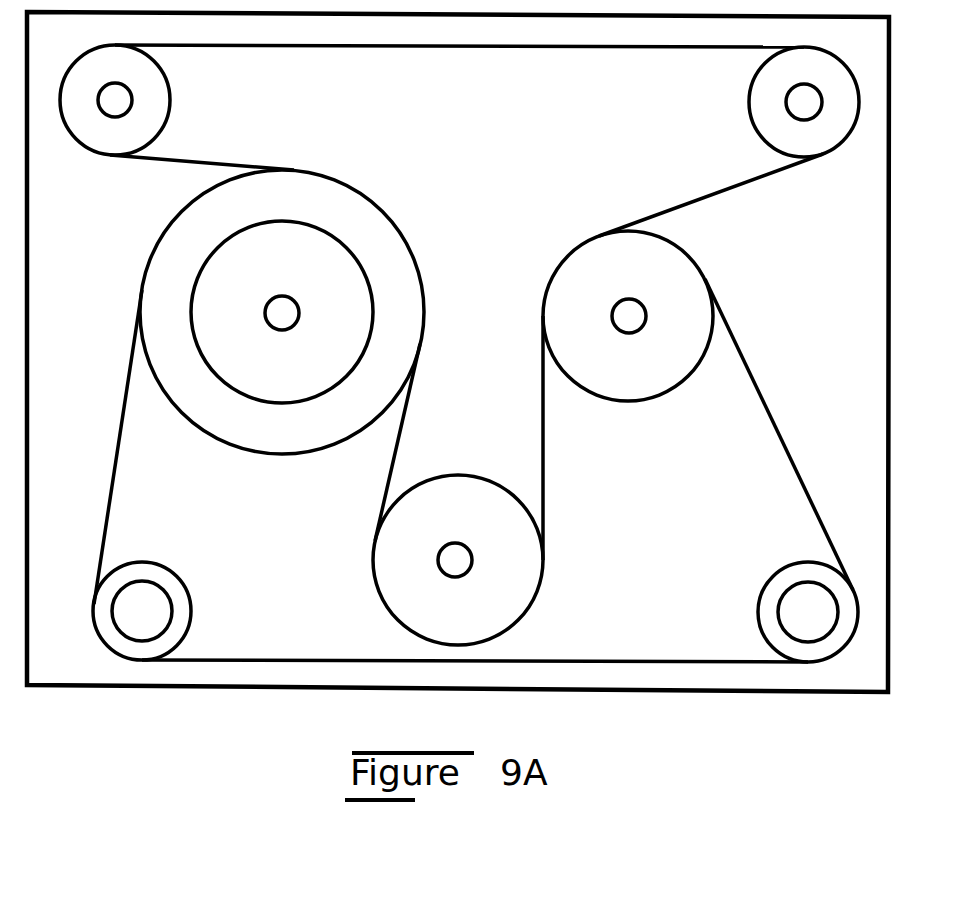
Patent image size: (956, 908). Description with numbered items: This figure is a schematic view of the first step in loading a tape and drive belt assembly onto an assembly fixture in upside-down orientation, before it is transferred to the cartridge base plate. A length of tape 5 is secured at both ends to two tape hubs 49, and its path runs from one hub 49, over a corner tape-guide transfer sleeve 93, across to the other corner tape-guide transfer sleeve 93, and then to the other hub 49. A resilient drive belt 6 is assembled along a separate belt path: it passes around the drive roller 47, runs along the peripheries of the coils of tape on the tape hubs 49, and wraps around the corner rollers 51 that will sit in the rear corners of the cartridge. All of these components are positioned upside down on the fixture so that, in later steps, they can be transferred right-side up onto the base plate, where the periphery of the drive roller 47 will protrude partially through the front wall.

The tape 5 is at (122, 447).
The drive belt 6 is at (207, 162).
The drive roller 47 is at (440, 520).
The tape hub 49 is at (264, 274).
The corner roller 51 is at (170, 97).
The corner tape-guide transfer sleeve 93 is at (178, 590).